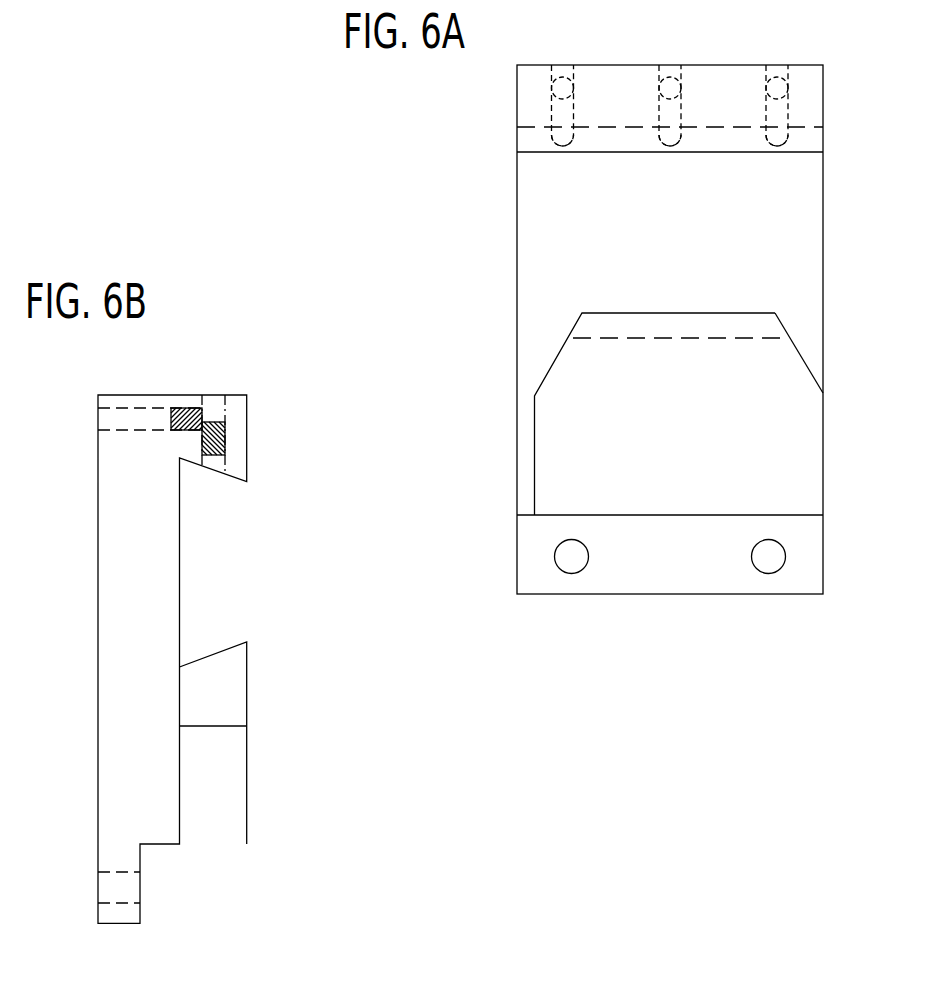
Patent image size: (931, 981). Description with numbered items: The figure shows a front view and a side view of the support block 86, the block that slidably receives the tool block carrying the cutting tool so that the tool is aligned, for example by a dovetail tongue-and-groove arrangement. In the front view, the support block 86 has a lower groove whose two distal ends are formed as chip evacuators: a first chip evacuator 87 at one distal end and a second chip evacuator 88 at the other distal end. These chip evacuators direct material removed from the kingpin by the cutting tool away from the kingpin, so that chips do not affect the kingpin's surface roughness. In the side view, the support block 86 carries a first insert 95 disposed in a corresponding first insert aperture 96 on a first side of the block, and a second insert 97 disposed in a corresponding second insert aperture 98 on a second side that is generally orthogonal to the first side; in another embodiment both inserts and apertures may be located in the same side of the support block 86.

In FIG. 6A, the support block 86 is at (823, 238).
In FIG. 6B, the support block 86 is at (98, 584).
In FIG. 6A, the first chip evacuator 87 is at (560, 353).
In FIG. 6B, the first chip evacuator 87 is at (215, 687).
In FIG. 6A, the second chip evacuator 88 is at (798, 353).
In FIG. 6B, the first insert 95 is at (217, 447).
In FIG. 6A, the first insert aperture 96 is at (563, 121).
In FIG. 6B, the first insert aperture 96 is at (213, 400).
In FIG. 6B, the second insert 97 is at (193, 410).
In FIG. 6A, the second insert aperture 98 is at (563, 87).
In FIG. 6B, the second insert aperture 98 is at (108, 418).